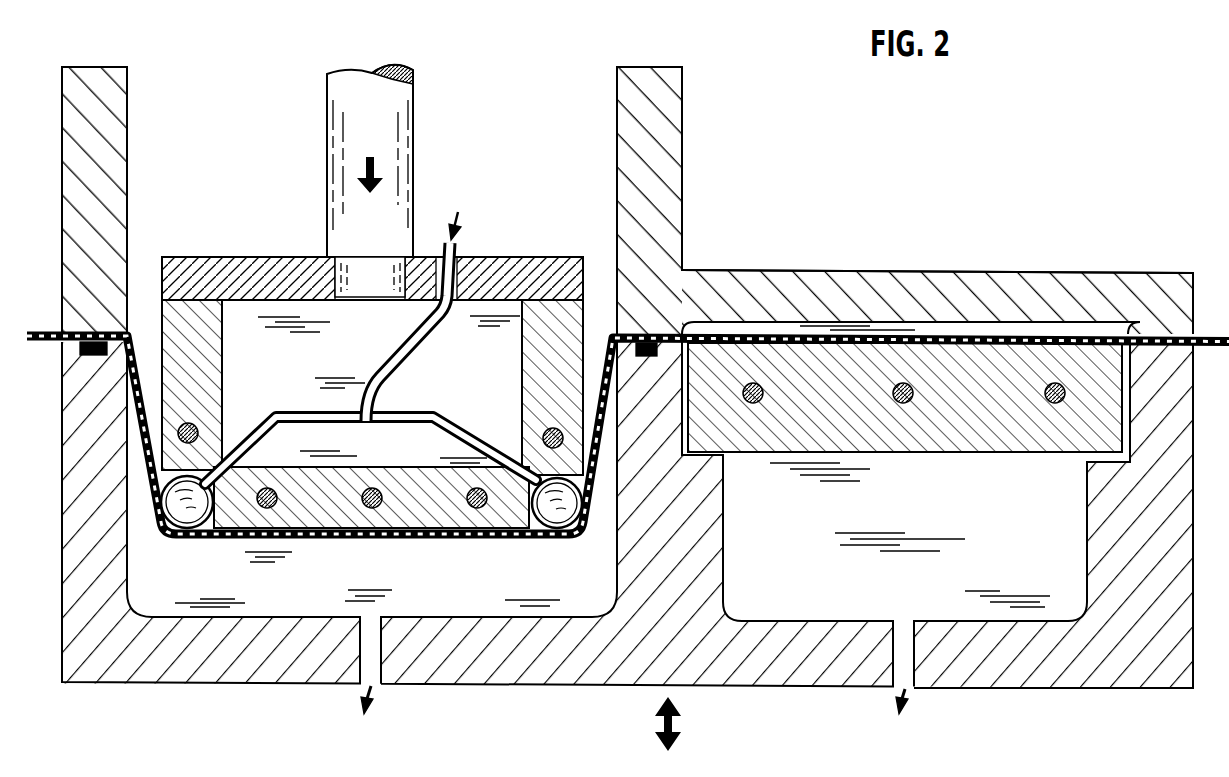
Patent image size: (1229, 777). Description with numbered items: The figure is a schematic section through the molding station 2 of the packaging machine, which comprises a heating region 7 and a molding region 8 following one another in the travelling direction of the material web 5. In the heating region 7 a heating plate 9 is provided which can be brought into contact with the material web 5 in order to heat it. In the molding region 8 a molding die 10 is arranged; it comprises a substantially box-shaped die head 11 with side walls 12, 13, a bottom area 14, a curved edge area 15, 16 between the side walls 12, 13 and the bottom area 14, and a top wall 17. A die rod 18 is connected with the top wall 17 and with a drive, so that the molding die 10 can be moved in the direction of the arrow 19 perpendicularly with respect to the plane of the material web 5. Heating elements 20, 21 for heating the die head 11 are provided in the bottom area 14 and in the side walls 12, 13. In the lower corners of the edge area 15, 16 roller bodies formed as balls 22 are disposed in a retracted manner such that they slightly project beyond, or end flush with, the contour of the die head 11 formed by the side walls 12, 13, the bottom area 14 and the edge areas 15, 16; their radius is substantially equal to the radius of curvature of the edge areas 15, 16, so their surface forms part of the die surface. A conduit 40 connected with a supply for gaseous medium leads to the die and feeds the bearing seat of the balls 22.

The molding station 2 is at (773, 138).
The material web 5 is at (1155, 338).
The heating region 7 is at (944, 262).
The molding region 8 is at (491, 78).
The heating plate 9 is at (1030, 365).
The molding die 10 is at (373, 390).
The die head 11 is at (204, 247).
The side wall 12 is at (163, 312).
The side wall 13 is at (584, 314).
The bottom area 14 is at (320, 510).
The edge area 15 is at (582, 550).
The edge area 16 is at (159, 548).
The top wall 17 is at (496, 276).
The die rod 18 is at (400, 122).
The arrow 19 is at (380, 175).
The heating elements 20 is at (476, 508).
The heating element 21 is at (545, 433).
The balls 22 is at (192, 524).
The conduit 40 is at (402, 355).